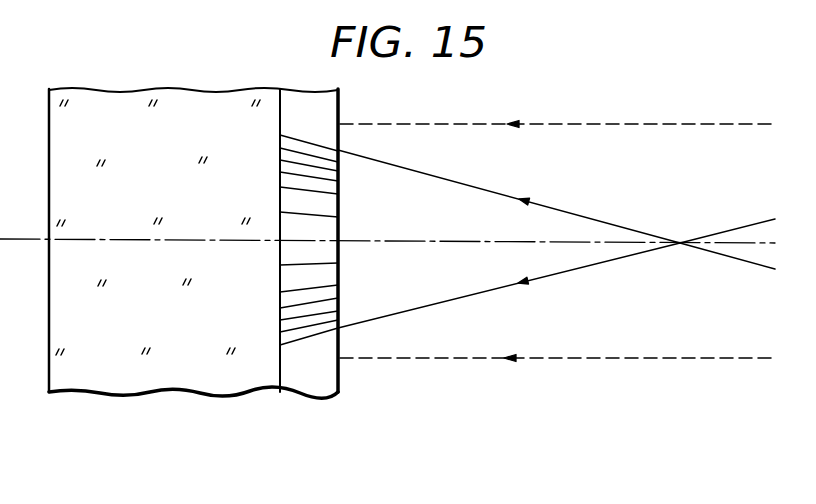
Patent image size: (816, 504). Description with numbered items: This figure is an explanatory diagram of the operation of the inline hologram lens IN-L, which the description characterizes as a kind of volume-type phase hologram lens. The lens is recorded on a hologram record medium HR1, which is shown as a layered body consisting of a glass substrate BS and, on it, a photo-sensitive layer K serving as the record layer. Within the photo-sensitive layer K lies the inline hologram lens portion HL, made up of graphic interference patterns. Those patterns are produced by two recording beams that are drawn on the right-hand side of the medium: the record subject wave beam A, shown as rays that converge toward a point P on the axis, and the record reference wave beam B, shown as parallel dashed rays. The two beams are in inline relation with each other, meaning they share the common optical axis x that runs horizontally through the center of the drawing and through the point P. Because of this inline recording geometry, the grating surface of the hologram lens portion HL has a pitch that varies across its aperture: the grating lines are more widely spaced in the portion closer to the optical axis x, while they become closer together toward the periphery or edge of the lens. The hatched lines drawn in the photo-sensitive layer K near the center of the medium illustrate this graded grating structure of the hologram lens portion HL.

The inline hologram lens IN-L is at (130, 394).
The glass substrate BS is at (240, 394).
The photo-sensitive layer K is at (313, 394).
The hologram record medium HR1 is at (322, 500).
The inline hologram lens portion HL is at (339, 249).
The record subject wave beam A is at (565, 208).
The record reference wave beam B is at (704, 126).
The focal point P is at (680, 247).
The optical axis x is at (451, 239).